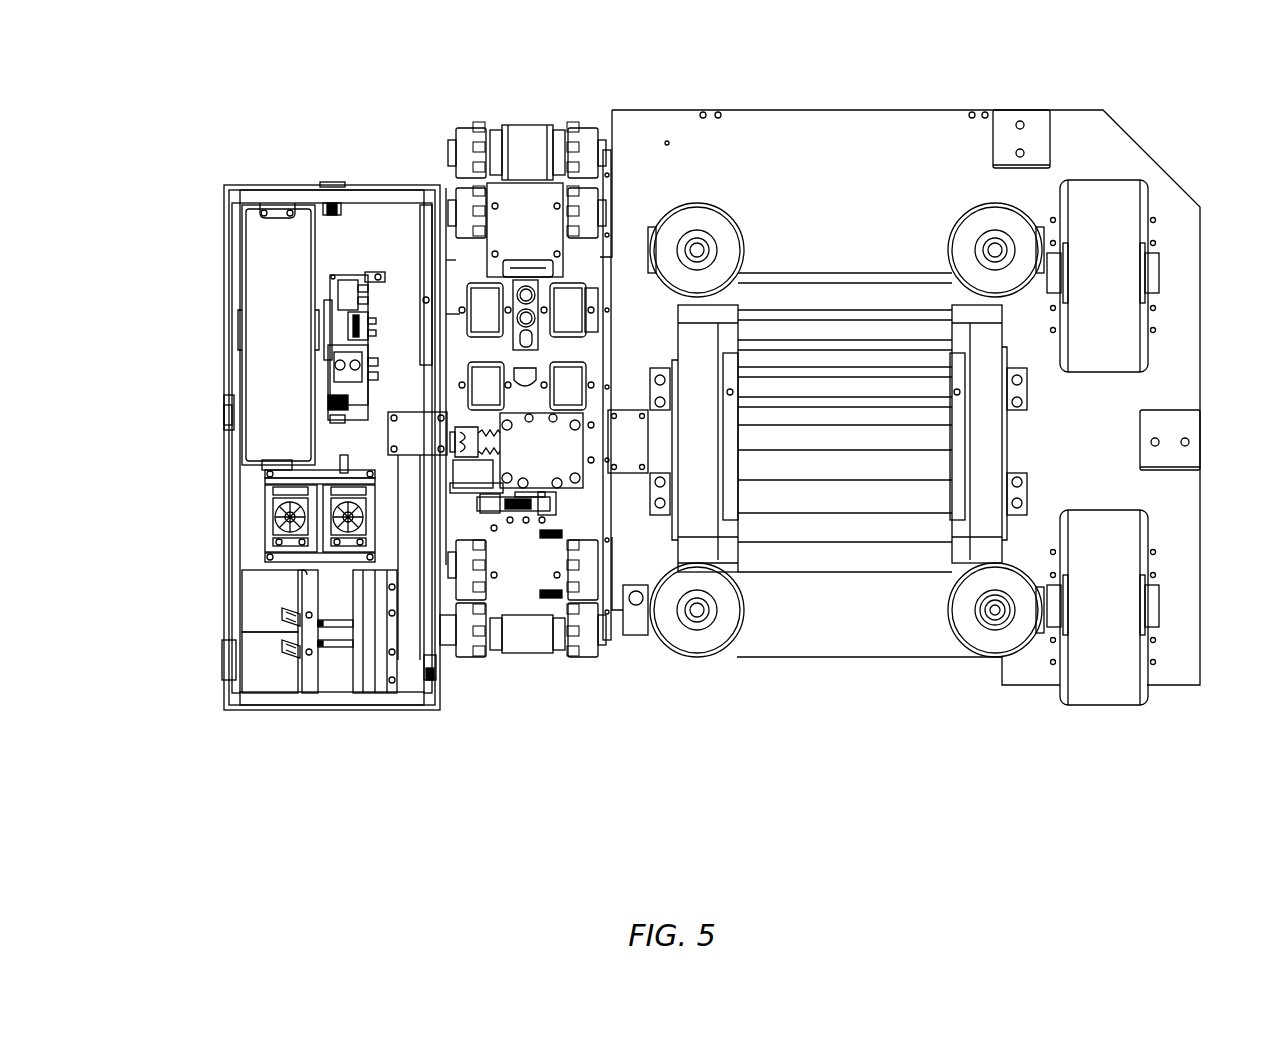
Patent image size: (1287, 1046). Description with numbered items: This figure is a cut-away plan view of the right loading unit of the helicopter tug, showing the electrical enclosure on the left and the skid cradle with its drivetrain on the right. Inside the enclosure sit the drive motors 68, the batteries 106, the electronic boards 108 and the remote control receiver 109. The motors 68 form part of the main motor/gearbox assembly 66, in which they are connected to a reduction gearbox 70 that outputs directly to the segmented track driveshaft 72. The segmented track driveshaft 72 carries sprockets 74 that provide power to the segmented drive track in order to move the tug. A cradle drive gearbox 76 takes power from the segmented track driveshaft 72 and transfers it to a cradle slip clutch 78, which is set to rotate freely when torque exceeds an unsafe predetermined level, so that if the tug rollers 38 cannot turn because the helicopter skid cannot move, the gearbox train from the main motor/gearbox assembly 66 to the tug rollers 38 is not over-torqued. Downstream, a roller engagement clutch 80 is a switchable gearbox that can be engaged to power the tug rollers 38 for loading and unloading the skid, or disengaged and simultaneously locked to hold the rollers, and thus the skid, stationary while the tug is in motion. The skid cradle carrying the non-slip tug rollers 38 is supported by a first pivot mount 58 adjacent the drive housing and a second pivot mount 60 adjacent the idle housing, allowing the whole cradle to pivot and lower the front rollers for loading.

The tug rollers 38 is at (830, 568).
The first pivot mount 58 is at (670, 432).
The second pivot mount 60 is at (1018, 432).
The main motor/gearbox assembly 66 is at (262, 733).
The motors 68 is at (270, 603).
The reduction gearbox 70 is at (370, 645).
The segmented track driveshaft 72 is at (414, 527).
The sprockets 74 is at (487, 665).
The cradle drive gearbox 76 is at (437, 655).
The cradle slip clutch 78 is at (472, 447).
The roller engagement clutch 80 is at (545, 452).
The batteries 106 is at (278, 418).
The electronic boards 108 is at (330, 352).
The remote control receiver 109 is at (343, 292).